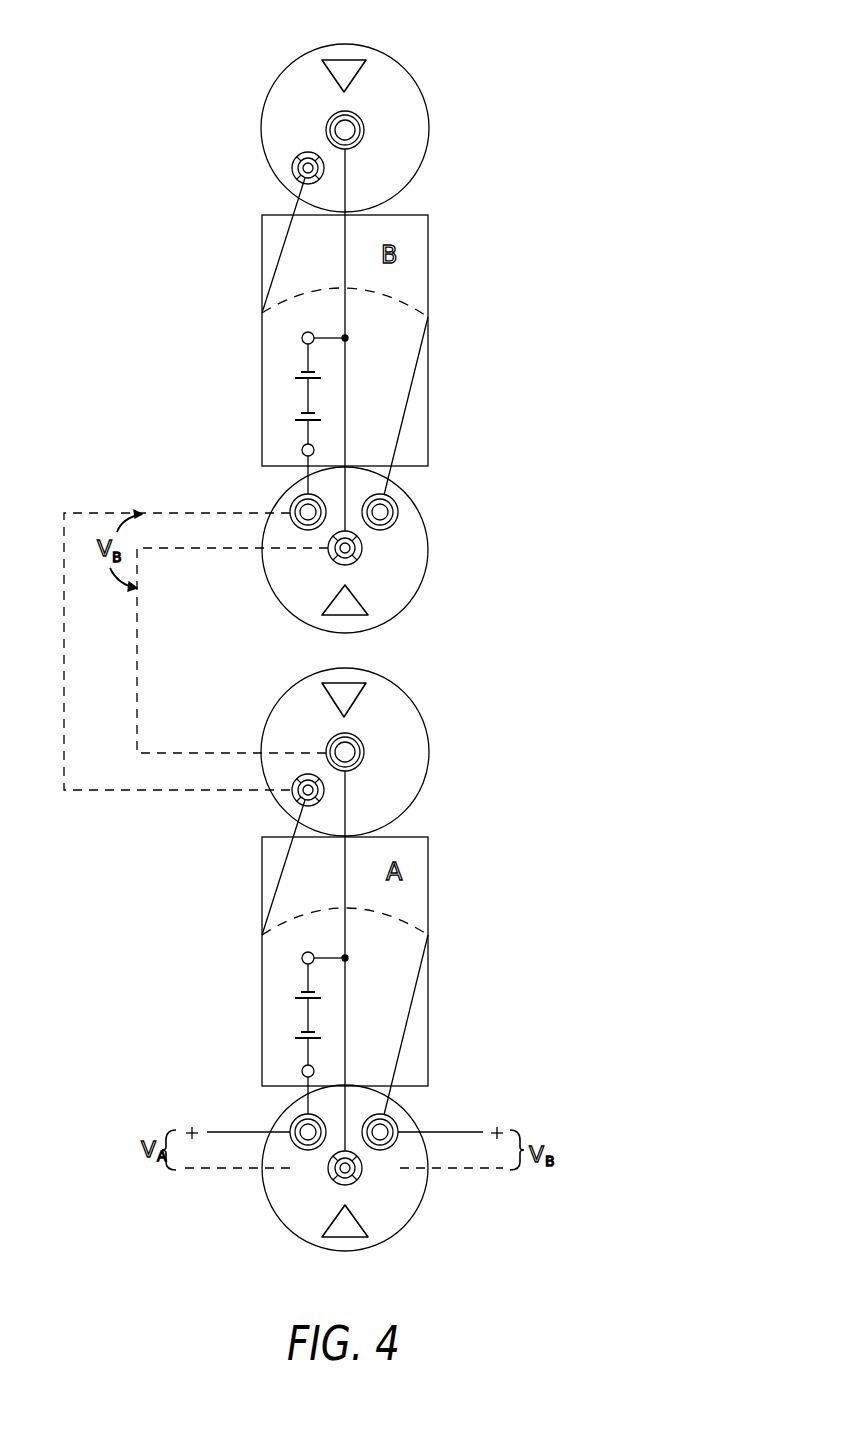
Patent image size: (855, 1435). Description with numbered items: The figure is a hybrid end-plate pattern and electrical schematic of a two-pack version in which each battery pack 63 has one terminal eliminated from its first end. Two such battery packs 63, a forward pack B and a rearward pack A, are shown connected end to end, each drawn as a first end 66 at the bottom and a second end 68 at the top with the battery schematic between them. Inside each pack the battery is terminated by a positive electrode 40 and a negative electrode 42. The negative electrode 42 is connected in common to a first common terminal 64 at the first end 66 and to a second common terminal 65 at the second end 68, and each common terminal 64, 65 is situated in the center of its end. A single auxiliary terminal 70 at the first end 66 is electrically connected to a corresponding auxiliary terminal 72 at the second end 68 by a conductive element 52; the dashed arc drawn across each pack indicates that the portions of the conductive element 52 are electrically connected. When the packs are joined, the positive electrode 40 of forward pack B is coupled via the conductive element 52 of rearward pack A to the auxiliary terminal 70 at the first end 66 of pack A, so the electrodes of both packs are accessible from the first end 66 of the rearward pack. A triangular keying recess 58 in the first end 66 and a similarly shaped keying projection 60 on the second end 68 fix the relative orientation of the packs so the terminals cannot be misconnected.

The positive electrode 40 is at (301, 450).
The negative electrode 42 is at (302, 340).
The conductive element 52 is at (278, 263).
The keying recess 58 is at (358, 620).
The keying projection 60 is at (350, 700).
The battery pack 63 is at (420, 282).
The first common terminal 64 is at (350, 567).
The second common terminal 65 is at (348, 112).
The first end 66 is at (413, 558).
The second end 68 is at (415, 118).
The auxiliary terminal 70 is at (400, 510).
The auxiliary terminal 72 is at (292, 162).